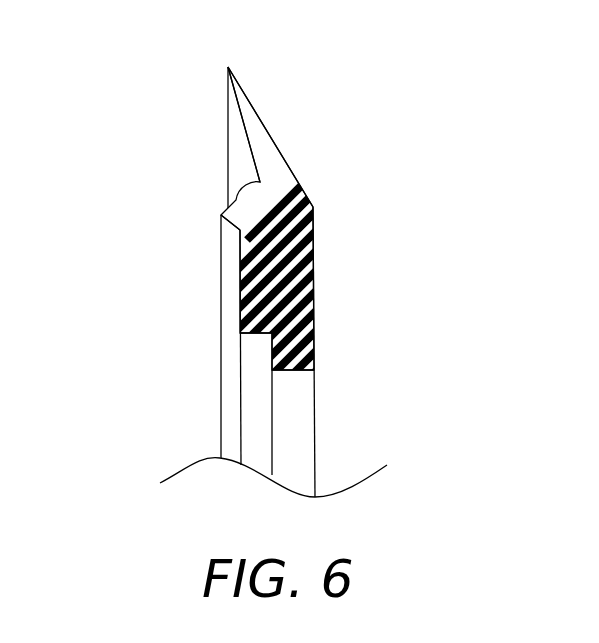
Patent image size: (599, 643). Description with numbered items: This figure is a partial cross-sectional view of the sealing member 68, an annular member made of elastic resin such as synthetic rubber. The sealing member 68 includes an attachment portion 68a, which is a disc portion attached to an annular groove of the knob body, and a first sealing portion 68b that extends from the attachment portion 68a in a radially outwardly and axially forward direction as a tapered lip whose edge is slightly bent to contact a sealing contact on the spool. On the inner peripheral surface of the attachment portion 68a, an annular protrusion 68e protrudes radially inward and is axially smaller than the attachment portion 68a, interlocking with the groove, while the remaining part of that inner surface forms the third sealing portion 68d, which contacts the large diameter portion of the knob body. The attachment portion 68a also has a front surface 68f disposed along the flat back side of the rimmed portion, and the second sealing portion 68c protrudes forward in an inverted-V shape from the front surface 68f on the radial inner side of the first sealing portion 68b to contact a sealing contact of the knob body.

The sealing member 68 is at (288, 152).
The attachment portion 68a is at (314, 285).
The first sealing portion 68b is at (258, 101).
The second sealing portion 68c is at (220, 215).
The third sealing portion 68d is at (246, 333).
The annular protrusion 68e is at (307, 372).
The front surface 68f is at (240, 291).